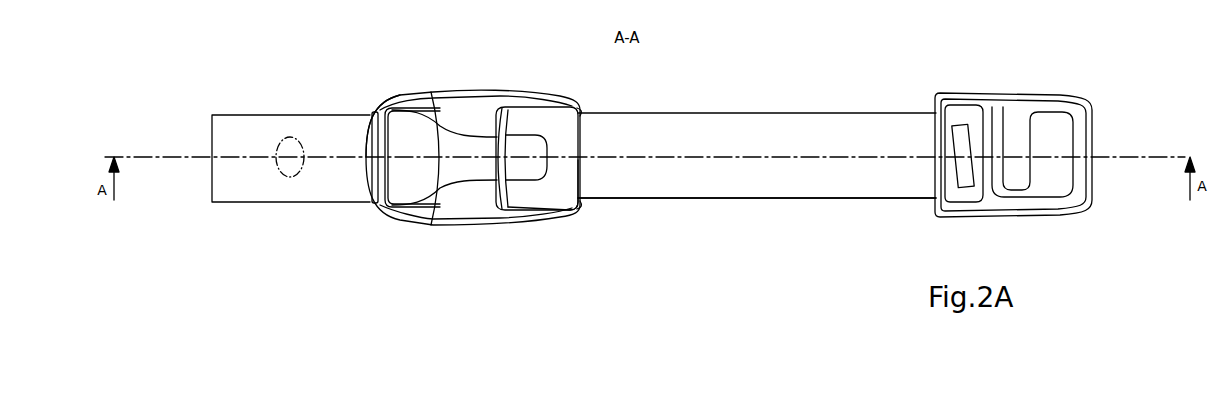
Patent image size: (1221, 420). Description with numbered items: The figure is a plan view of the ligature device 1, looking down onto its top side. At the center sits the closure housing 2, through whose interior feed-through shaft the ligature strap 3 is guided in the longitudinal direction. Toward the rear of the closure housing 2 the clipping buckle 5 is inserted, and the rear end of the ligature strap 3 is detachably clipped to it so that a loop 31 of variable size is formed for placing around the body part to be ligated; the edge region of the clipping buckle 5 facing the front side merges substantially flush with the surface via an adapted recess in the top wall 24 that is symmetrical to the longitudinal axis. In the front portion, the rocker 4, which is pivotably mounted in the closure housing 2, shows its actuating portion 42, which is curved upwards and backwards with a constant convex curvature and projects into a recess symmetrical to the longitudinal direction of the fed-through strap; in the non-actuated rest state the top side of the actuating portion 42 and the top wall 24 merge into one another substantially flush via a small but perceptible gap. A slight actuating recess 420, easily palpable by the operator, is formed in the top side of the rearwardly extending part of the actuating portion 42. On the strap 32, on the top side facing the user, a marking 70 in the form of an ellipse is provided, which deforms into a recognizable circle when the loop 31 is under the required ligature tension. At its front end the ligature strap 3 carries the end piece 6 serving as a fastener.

The ligature device 1 is at (341, 288).
The closure housing 2 is at (472, 88).
The ligature strap 3 is at (712, 108).
The rocker 4 is at (553, 118).
The clipping buckle 5 is at (402, 92).
The end piece 6 is at (983, 73).
The top wall 24 is at (483, 208).
The loop 31 is at (245, 102).
The strap 32 is at (753, 186).
The actuating portion 42 is at (553, 198).
The marking 70 is at (272, 176).
The actuating recess 420 is at (523, 148).